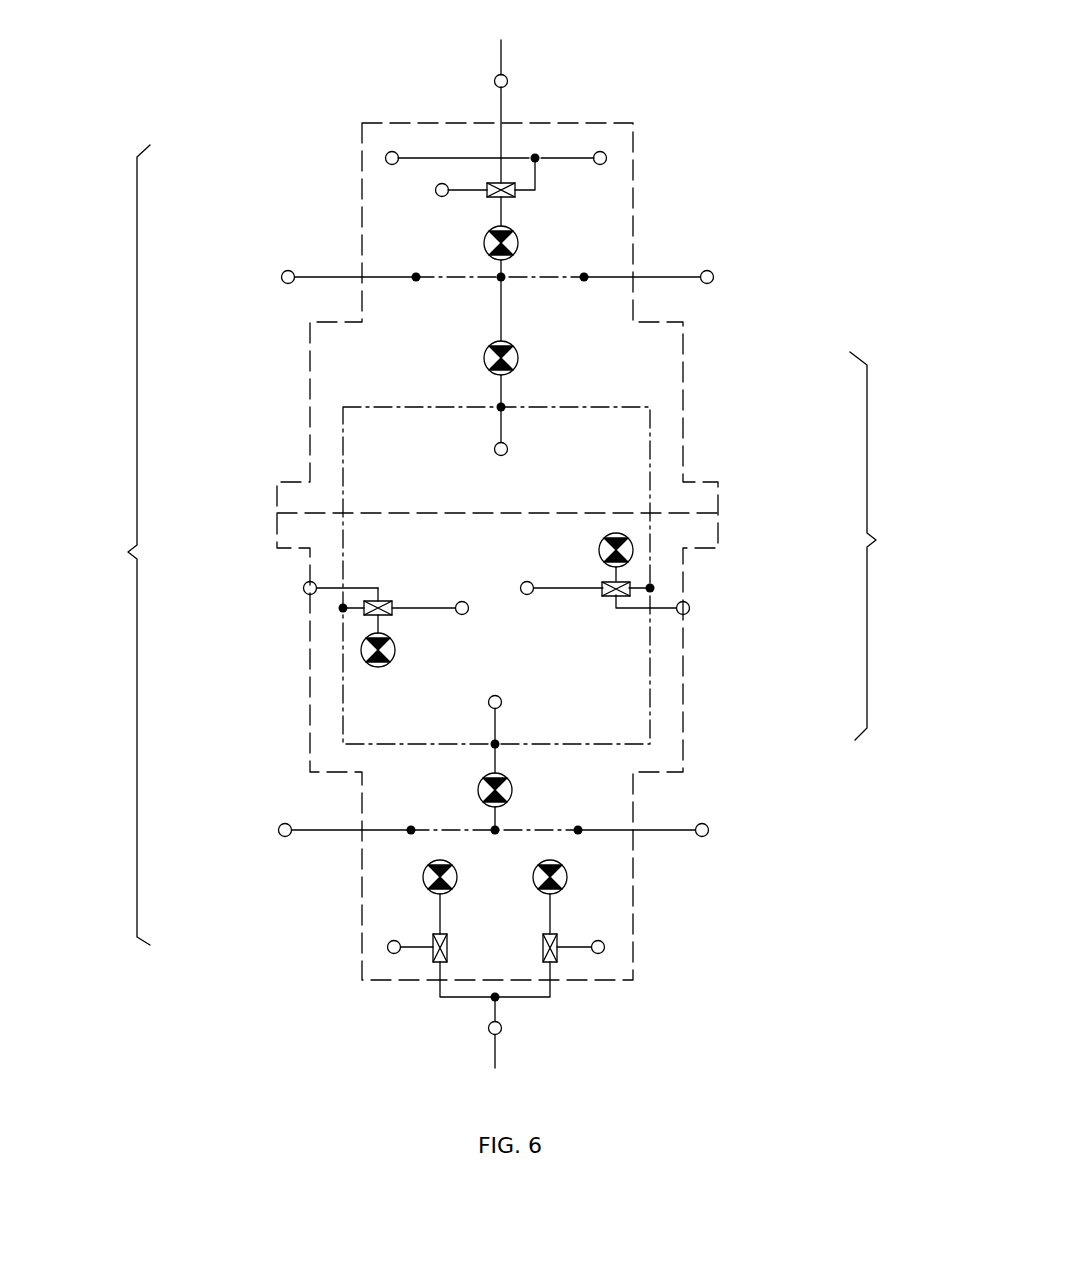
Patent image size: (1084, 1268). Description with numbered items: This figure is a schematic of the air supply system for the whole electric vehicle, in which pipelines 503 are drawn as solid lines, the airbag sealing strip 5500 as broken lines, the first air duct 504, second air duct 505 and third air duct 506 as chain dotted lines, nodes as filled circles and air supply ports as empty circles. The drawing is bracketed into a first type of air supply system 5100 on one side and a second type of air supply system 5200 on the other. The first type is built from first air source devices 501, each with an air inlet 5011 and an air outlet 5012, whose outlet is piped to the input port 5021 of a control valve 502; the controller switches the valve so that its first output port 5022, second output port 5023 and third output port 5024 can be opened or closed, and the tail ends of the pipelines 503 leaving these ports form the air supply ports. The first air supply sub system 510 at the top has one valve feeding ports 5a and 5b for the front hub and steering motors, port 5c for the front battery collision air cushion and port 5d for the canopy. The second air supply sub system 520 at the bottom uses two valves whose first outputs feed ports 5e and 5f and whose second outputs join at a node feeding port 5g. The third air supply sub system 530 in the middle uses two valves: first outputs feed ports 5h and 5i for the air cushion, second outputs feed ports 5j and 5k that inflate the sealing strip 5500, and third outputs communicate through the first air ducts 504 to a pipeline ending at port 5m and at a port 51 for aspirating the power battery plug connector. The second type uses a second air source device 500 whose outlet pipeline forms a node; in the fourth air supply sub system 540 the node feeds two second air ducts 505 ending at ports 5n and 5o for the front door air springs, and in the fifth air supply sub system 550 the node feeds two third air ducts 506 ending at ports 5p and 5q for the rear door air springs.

The first type of air supply system 5100 is at (107, 545).
The second type of air supply system 5200 is at (891, 546).
The airbag sealing strip 5500 is at (310, 368).
The first air supply sub system 510 is at (283, 160).
The second air supply sub system 520 is at (283, 961).
The third air supply sub system 530 is at (280, 565).
The fourth air supply sub system 540 is at (722, 338).
The fifth air supply sub system 550 is at (720, 755).
The second air source device 500 is at (510, 372).
The first air source device 501 is at (485, 246).
The air inlet 5011 is at (512, 256).
The air outlet 5012 is at (510, 230).
The control valve 502 is at (494, 183).
The input port 5021 is at (515, 196).
The first output port 5022 is at (515, 191).
The second output port 5023 is at (506, 183).
The third output port 5024 is at (487, 193).
The pipeline 503 is at (501, 214).
The first air duct 504 is at (420, 409).
The second air duct 505 is at (445, 280).
The third air duct 506 is at (453, 828).
The connection port 51 is at (500, 456).
The air supply port 5a is at (387, 153).
The air supply port 5b is at (606, 158).
The air supply port 5c is at (505, 49).
The air supply port 5d is at (435, 190).
The air supply port 5e is at (387, 947).
The air supply port 5f is at (605, 947).
The air supply port 5g is at (495, 1047).
The air supply port 5h is at (531, 596).
The air supply port 5i is at (460, 601).
The air supply port 5j is at (303, 588).
The air supply port 5k is at (690, 608).
The air supply port 5m is at (497, 695).
The air supply port 5n is at (281, 277).
The air supply port 5o is at (714, 277).
The air supply port 5p is at (278, 830).
The air supply port 5q is at (709, 830).